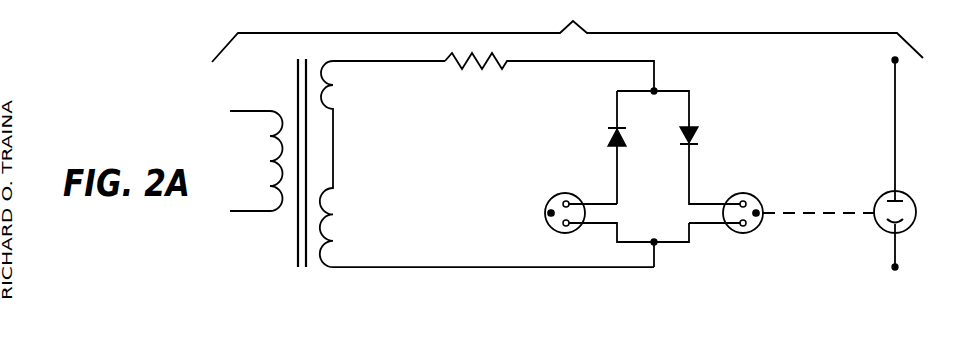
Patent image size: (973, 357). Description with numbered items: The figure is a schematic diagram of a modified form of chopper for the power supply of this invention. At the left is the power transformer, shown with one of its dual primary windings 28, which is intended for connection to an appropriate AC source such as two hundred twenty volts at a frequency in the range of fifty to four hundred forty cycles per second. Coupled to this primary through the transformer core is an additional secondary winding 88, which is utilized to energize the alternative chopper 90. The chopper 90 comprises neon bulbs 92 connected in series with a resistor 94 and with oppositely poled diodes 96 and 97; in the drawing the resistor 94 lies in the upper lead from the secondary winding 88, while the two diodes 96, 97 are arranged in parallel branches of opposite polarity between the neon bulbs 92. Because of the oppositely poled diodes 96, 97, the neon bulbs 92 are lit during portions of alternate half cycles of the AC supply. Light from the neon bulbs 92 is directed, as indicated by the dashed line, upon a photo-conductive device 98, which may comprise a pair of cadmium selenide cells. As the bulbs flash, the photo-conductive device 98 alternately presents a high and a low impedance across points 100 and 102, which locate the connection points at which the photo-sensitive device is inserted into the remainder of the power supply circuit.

The primary winding 28 is at (278, 172).
The additional secondary winding 88 is at (323, 127).
The resistor 94 is at (472, 70).
The alternative chopper 90 is at (514, 187).
The diode 97 is at (627, 135).
The diode 96 is at (698, 135).
The neon bulb 92 is at (548, 215).
The photo-conductive device 98 is at (916, 208).
The point 100 is at (893, 61).
The point 102 is at (896, 268).